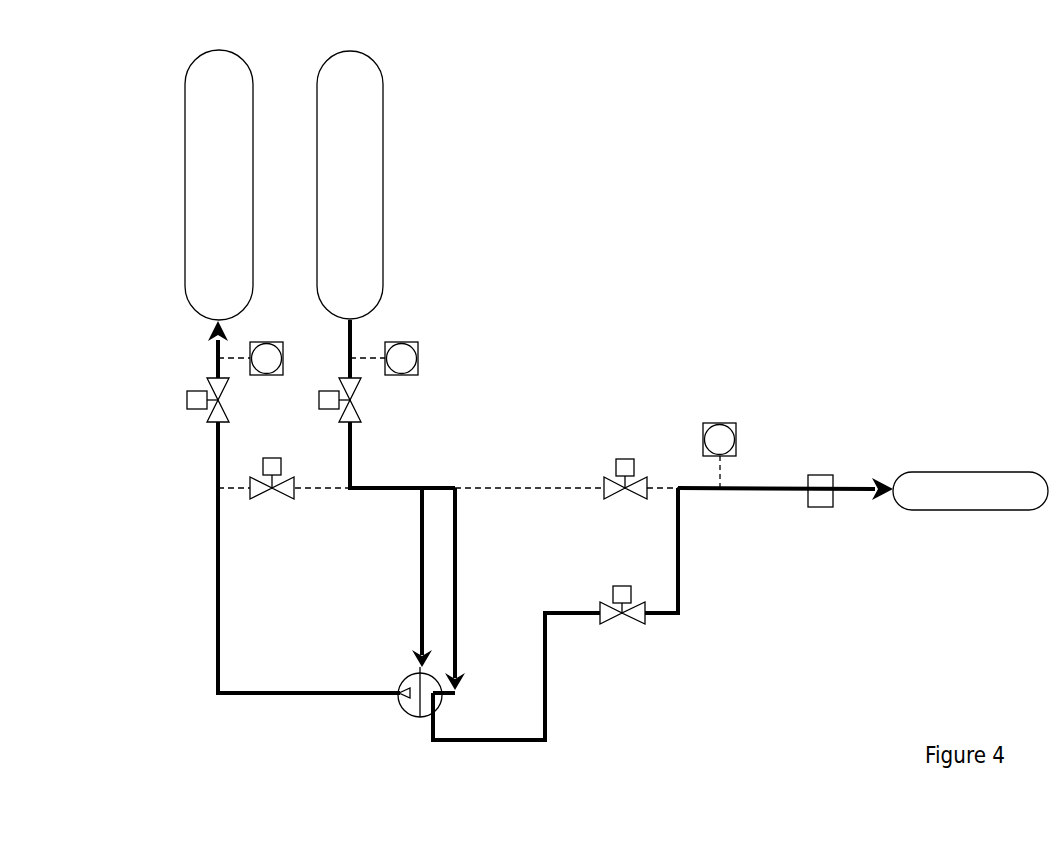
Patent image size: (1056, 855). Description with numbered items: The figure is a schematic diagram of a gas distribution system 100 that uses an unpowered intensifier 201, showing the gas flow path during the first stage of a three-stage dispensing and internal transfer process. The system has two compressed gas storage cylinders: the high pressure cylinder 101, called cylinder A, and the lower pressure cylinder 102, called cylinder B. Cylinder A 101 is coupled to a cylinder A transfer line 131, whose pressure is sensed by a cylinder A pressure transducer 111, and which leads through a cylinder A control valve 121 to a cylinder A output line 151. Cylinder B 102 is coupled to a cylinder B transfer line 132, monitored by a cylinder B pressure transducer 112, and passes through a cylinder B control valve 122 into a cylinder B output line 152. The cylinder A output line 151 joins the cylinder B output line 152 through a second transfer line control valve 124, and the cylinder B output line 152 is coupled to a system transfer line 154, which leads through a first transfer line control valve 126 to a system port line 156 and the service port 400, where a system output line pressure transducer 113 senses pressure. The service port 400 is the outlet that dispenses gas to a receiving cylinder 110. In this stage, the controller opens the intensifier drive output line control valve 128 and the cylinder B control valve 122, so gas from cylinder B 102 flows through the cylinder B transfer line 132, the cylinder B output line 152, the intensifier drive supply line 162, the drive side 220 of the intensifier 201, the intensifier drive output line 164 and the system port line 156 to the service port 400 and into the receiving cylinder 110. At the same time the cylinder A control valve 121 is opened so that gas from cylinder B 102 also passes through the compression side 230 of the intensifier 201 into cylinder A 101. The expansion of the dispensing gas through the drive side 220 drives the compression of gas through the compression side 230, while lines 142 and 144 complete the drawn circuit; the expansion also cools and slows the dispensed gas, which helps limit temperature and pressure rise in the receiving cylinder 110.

The gas distribution system 100 is at (653, 120).
The high pressure cylinder 101 is at (205, 60).
The lower pressure cylinder 102 is at (345, 60).
The receiving cylinder 110 is at (975, 471).
The cylinder A pressure transducer 111 is at (276, 344).
The cylinder B pressure transducer 112 is at (420, 358).
The system output line pressure transducer 113 is at (730, 421).
The cylinder A control valve 121 is at (200, 397).
The cylinder B control valve 122 is at (360, 397).
The second transfer line control valve 124 is at (280, 498).
The first transfer line control valve 126 is at (614, 476).
The intensifier drive output line control valve 128 is at (628, 625).
The cylinder A transfer line 131 is at (212, 337).
The cylinder B transfer line 132 is at (352, 338).
The feed line 142 is at (420, 588).
The feed line 144 is at (216, 588).
The cylinder A output line 151 is at (228, 484).
The cylinder B output line 152 is at (376, 486).
The system transfer line 154 is at (490, 486).
The system port line 156 is at (772, 487).
The intensifier drive supply line 162 is at (458, 598).
The intensifier drive output line 164 is at (487, 742).
The unpowered intensifier 201 is at (408, 713).
The drive side 220 is at (440, 694).
The compression side 230 is at (410, 680).
The service port 400 is at (818, 509).